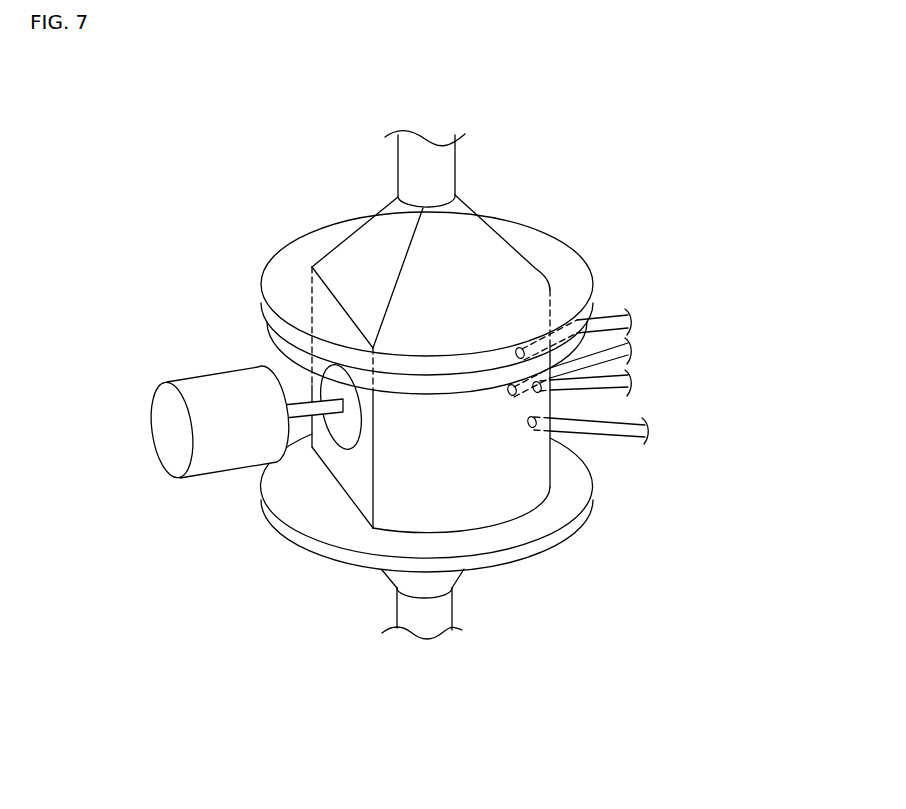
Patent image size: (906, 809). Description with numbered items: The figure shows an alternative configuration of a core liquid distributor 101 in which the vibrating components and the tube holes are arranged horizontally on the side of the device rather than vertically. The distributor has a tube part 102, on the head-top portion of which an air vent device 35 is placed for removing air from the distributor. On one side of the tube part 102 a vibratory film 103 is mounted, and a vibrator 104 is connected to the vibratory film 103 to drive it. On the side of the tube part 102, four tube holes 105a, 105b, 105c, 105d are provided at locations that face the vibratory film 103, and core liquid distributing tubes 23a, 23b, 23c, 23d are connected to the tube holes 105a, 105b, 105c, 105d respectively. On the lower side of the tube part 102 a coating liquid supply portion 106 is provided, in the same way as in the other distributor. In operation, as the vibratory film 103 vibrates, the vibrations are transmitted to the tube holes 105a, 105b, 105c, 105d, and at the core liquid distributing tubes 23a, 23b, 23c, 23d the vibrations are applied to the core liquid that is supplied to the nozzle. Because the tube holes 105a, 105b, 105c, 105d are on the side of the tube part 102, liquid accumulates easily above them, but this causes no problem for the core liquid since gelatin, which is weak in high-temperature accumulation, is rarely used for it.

The core liquid distributor 101 is at (627, 223).
The tube part 102 is at (513, 490).
The vibratory film 103 is at (340, 437).
The vibrator 104 is at (228, 460).
The tube hole 105a is at (528, 422).
The tube hole 105b is at (536, 392).
The tube hole 105c is at (507, 390).
The tube hole 105d is at (516, 350).
The coating liquid supply portion 106 is at (432, 625).
The air vent device 35 is at (458, 158).
The core liquid distributing tube 23a is at (617, 435).
The core liquid distributing tube 23b is at (617, 383).
The core liquid distributing tube 23c is at (633, 348).
The core liquid distributing tube 23d is at (612, 318).